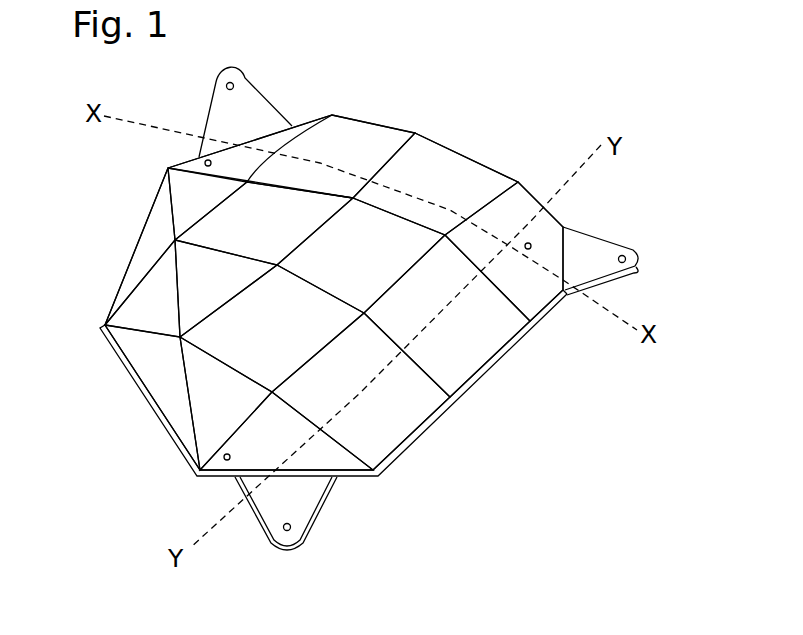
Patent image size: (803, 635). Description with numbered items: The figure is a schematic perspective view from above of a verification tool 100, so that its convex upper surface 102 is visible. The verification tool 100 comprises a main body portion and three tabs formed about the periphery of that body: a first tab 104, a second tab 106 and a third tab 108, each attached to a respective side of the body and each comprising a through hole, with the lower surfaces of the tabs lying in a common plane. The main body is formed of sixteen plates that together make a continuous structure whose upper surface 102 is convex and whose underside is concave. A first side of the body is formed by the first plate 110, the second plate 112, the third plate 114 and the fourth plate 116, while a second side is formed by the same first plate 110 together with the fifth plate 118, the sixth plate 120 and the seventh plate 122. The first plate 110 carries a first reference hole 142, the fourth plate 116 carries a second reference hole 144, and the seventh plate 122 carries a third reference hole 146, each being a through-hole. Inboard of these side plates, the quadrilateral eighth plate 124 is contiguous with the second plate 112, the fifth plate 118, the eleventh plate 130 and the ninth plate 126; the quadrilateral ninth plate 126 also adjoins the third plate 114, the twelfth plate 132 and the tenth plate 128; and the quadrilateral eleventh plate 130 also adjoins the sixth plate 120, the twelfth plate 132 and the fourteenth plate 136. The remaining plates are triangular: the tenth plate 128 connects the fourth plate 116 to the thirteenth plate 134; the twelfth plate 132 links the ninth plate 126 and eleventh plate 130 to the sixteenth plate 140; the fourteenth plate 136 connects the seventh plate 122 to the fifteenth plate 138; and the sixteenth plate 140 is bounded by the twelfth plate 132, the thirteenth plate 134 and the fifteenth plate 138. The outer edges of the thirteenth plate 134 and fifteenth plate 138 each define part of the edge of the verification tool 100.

The verification tool 100 is at (532, 111).
The upper surface 102 is at (367, 116).
The first tab 104 is at (638, 254).
The second tab 106 is at (263, 89).
The third tab 108 is at (313, 525).
The first plate 110 is at (538, 292).
The second plate 112 is at (460, 190).
The third plate 114 is at (368, 157).
The fourth plate 116 is at (282, 128).
The fifth plate 118 is at (481, 349).
The sixth plate 120 is at (405, 425).
The seventh plate 122 is at (290, 445).
The eighth plate 124 is at (381, 262).
The ninth plate 126 is at (276, 232).
The tenth plate 128 is at (213, 202).
The eleventh plate 130 is at (293, 336).
The twelfth plate 132 is at (226, 289).
The thirteenth plate 134 is at (143, 250).
The fourteenth plate 136 is at (238, 409).
The fifteenth plate 138 is at (160, 380).
The sixteenth plate 140 is at (166, 323).
The first reference hole 142 is at (530, 243).
The second reference hole 144 is at (203, 162).
The third reference hole 146 is at (227, 462).